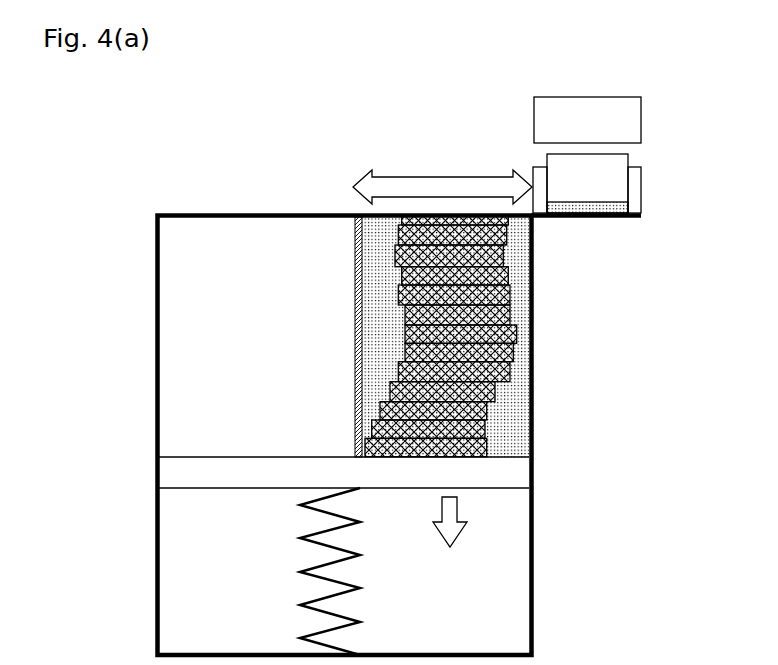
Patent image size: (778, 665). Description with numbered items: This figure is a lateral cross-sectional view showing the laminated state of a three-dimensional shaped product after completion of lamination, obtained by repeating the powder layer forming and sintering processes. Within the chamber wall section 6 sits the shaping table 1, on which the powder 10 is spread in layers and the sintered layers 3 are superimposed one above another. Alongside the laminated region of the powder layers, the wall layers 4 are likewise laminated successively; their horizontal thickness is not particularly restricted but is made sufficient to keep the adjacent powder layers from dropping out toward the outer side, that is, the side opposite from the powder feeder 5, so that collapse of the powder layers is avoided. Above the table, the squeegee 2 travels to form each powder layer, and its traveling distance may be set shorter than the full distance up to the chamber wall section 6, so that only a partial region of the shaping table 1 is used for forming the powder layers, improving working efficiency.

The shaping table 1 is at (480, 472).
The squeegee 2 is at (603, 187).
The sintered layer 3 is at (518, 292).
The wall layer 4 is at (332, 295).
The powder feeder 5 is at (603, 124).
The chamber wall section 6 is at (157, 352).
The powder 10 is at (380, 277).